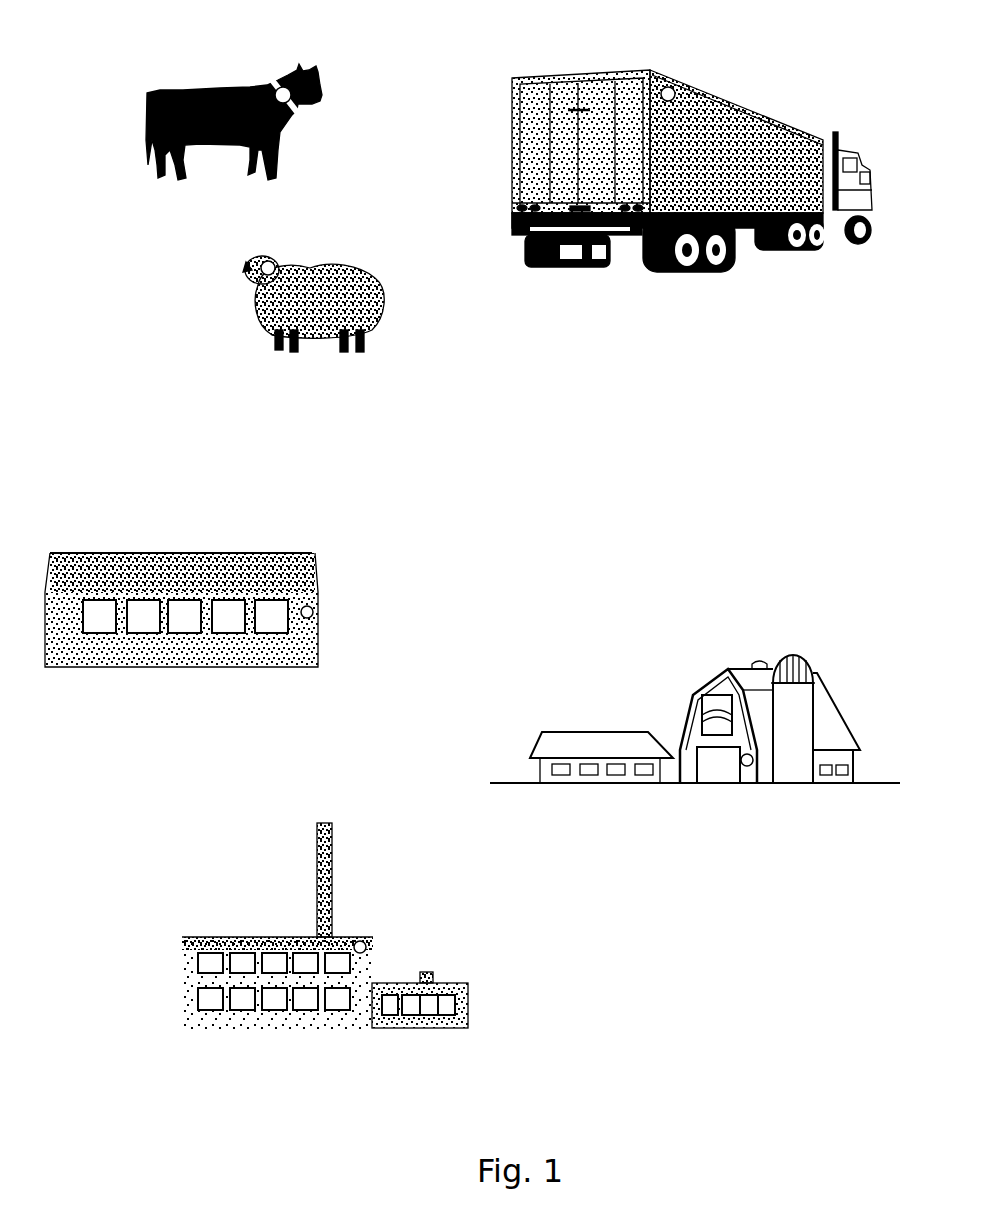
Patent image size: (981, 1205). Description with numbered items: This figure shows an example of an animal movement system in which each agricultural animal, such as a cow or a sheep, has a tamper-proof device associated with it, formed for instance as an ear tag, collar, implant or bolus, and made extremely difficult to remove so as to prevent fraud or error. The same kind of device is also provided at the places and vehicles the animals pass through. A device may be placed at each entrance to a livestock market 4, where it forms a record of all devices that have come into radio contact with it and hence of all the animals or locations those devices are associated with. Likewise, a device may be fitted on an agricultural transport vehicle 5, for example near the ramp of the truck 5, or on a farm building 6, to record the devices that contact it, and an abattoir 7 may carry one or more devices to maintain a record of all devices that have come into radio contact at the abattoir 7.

The livestock market 4 is at (190, 668).
The agricultural transport vehicle 5 is at (723, 265).
The farm building 6 is at (673, 783).
The abattoir 7 is at (327, 1033).